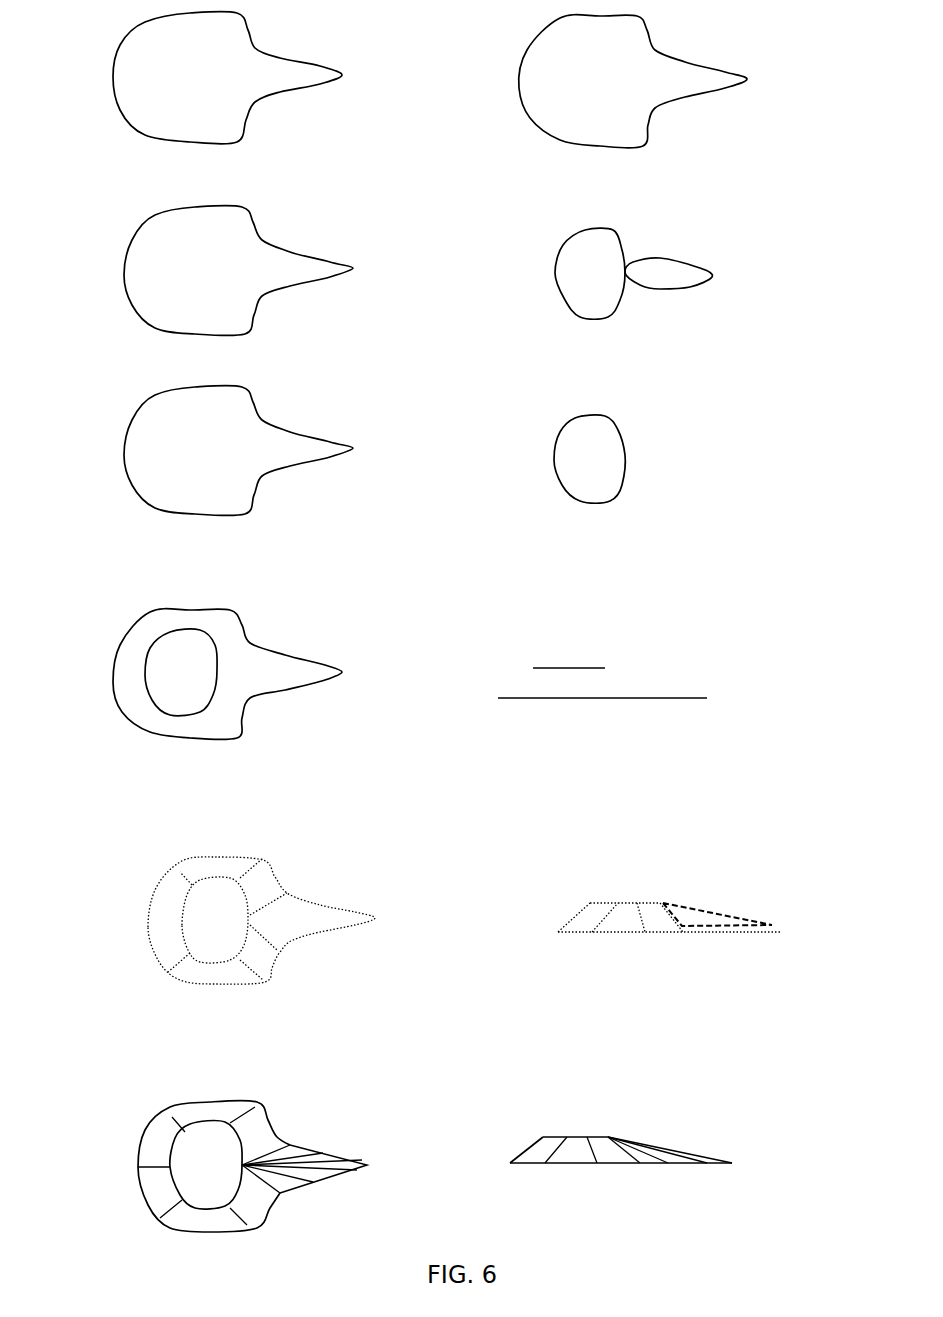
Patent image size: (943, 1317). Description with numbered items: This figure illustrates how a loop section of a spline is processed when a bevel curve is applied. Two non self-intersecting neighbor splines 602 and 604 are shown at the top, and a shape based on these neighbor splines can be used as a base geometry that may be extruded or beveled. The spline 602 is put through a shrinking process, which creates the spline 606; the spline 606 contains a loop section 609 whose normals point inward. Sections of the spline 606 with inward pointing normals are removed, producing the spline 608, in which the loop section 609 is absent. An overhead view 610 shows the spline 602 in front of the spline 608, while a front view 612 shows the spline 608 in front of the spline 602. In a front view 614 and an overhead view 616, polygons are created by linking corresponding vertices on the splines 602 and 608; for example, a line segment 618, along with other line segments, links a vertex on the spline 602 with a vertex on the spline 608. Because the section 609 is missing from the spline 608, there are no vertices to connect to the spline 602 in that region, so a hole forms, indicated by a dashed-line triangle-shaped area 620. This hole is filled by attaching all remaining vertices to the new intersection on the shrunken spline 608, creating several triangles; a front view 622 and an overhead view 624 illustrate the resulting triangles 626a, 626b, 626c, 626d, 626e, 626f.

The non self-intersecting spline 602 is at (143, 32).
The non self-intersecting spline 604 is at (553, 33).
The spline 606 is at (570, 243).
The spline 608 is at (555, 444).
The loop section 609 is at (715, 292).
The overhead view 610 is at (736, 635).
The front view 612 is at (67, 612).
The front view 614 is at (67, 863).
The overhead view 616 is at (800, 853).
The line segment 618 is at (188, 878).
The dashed-line triangle-shaped area 620 is at (700, 913).
The front view 622 is at (120, 1090).
The overhead view 624 is at (753, 1090).
The triangle 626a is at (287, 1147).
The triangle 626b is at (317, 1153).
The triangle 626c is at (360, 1158).
The triangle 626d is at (350, 1173).
The triangle 626e is at (300, 1178).
The triangle 626f is at (273, 1187).